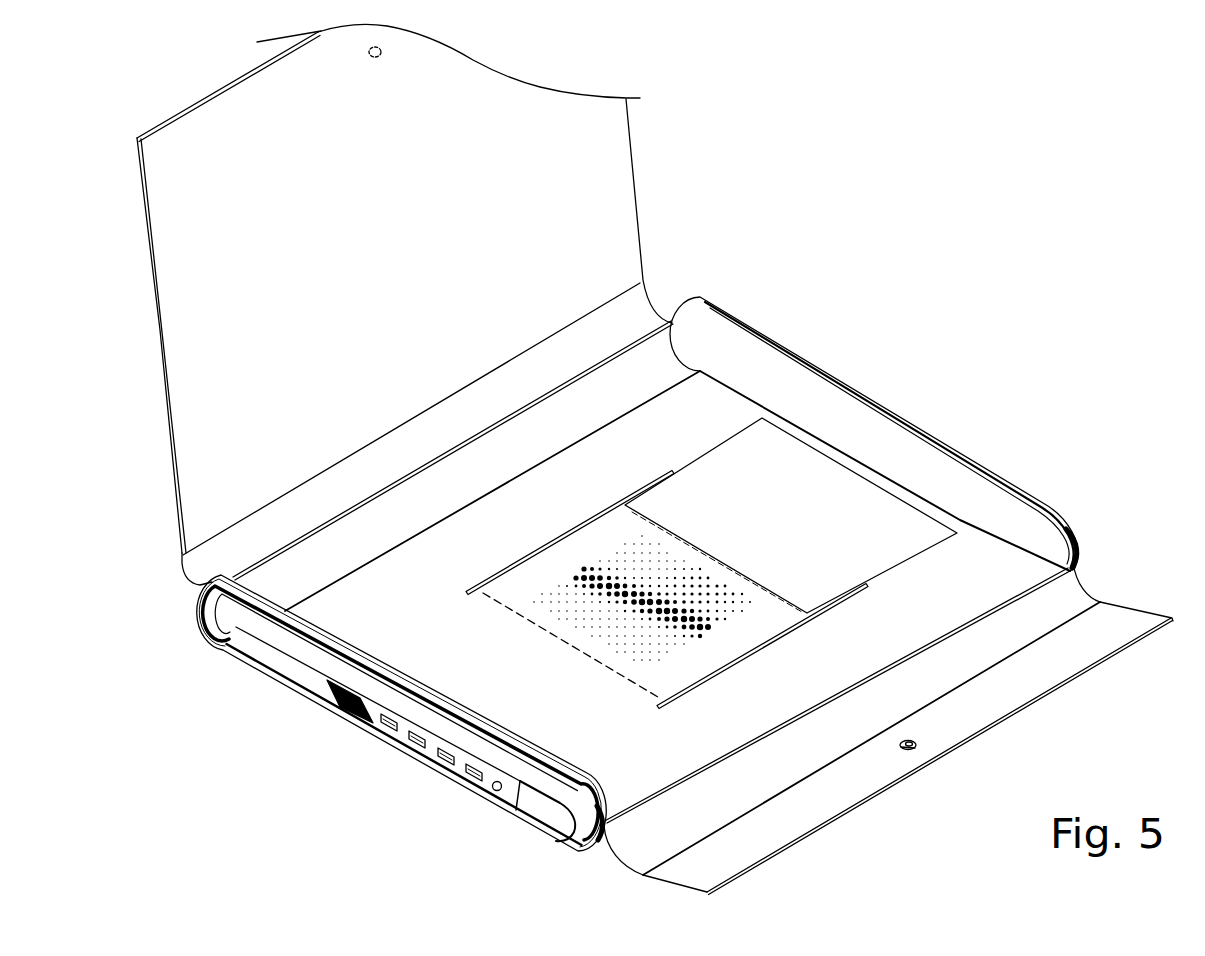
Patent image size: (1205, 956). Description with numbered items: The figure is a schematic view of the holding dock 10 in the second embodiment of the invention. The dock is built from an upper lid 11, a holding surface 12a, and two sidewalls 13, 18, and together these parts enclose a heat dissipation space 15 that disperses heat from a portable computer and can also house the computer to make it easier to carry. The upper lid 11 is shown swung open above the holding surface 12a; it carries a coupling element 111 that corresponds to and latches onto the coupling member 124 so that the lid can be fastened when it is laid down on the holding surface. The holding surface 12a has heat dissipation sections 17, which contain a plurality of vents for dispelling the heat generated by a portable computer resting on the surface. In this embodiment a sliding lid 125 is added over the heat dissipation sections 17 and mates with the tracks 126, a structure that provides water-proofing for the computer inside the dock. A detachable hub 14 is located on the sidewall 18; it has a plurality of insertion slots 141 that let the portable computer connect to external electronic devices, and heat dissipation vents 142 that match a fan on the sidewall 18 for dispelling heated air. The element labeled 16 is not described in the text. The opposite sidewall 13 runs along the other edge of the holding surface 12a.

The holding dock 10 is at (658, 461).
The upper lid 11 is at (398, 270).
The coupling element 111 is at (383, 56).
The holding surface 12a is at (966, 581).
The coupling member 124 is at (918, 748).
The sliding lid 125 is at (880, 503).
The tracks 126 is at (790, 630).
The sidewall 13 is at (808, 358).
The detachable hub 14 is at (285, 663).
The insertion slots 141 is at (477, 772).
The heat dissipation vents 142 is at (333, 713).
The heat dissipation space 15 is at (705, 400).
The end cap 16 is at (548, 813).
The heat dissipation sections 17 is at (697, 642).
The sidewall 18 is at (267, 618).